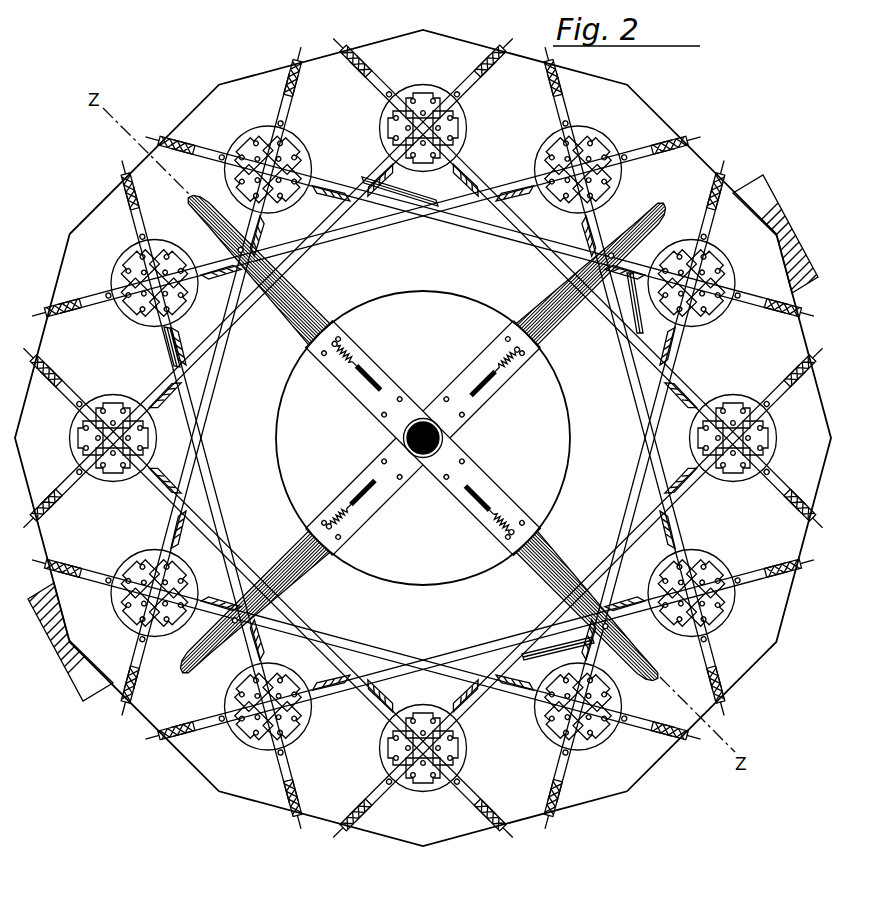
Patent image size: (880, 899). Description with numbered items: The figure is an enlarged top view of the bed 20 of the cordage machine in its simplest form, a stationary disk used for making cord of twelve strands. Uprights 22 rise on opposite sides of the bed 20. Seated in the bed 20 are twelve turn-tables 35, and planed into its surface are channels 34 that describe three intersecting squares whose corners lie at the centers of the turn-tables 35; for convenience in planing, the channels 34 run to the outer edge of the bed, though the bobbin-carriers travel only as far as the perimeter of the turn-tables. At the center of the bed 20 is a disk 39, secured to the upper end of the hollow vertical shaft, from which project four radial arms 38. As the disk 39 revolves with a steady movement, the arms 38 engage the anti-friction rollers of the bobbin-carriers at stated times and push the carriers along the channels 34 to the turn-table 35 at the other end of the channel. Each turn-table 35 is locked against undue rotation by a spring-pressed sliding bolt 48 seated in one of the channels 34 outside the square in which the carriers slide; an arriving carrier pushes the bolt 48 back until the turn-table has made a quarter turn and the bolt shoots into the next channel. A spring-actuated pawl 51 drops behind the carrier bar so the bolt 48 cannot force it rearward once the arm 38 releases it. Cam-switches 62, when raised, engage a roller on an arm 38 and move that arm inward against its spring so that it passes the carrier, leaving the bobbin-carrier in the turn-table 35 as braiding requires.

The bed 20 is at (423, 438).
The uprights 22 is at (796, 207).
The channels 34 is at (243, 317).
The turn-tables 35 is at (123, 477).
The arms 38 is at (295, 300).
The disk 39 is at (423, 438).
The sliding bolt 48 is at (622, 153).
The spring-actuated pawl 51 is at (697, 397).
The cam-switch 62 is at (432, 203).